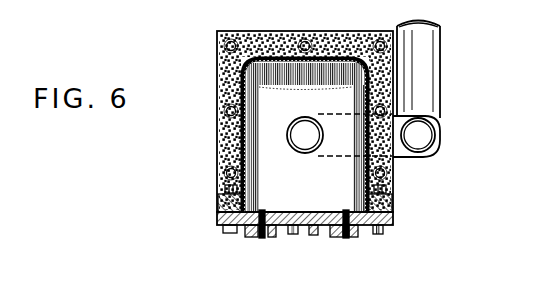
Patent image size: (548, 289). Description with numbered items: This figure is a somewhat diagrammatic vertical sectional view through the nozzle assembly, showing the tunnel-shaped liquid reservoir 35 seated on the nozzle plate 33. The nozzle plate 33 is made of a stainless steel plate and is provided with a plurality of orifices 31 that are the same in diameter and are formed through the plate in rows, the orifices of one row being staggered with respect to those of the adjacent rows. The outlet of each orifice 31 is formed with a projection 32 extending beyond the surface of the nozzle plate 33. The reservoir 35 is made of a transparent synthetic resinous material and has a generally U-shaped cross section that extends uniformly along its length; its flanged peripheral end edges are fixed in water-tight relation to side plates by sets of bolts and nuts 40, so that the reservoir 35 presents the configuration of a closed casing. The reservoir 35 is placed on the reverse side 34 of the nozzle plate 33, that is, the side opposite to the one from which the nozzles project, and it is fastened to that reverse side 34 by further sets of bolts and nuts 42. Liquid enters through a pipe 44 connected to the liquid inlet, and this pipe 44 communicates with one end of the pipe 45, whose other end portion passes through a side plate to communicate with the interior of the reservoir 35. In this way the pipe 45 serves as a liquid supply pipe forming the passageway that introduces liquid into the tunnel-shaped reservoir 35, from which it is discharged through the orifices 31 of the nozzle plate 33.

The orifice 31 is at (265, 238).
The projection 32 is at (250, 234).
The nozzle plate 33 is at (394, 218).
The reverse side 34 is at (312, 212).
The tunnel-shaped liquid reservoir 35 is at (243, 85).
The sets of bolts and nuts 40 is at (225, 46).
The sets of bolts and nuts 42 is at (222, 228).
The pipe 44 is at (430, 66).
The pipe 45 is at (292, 124).